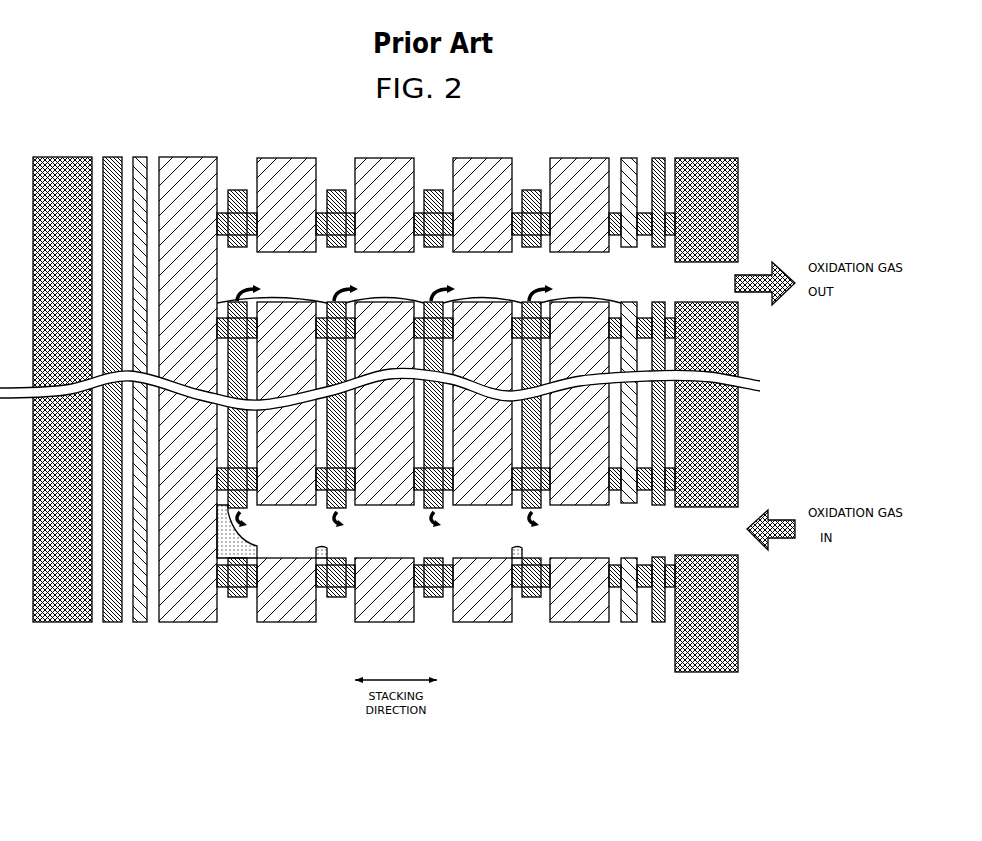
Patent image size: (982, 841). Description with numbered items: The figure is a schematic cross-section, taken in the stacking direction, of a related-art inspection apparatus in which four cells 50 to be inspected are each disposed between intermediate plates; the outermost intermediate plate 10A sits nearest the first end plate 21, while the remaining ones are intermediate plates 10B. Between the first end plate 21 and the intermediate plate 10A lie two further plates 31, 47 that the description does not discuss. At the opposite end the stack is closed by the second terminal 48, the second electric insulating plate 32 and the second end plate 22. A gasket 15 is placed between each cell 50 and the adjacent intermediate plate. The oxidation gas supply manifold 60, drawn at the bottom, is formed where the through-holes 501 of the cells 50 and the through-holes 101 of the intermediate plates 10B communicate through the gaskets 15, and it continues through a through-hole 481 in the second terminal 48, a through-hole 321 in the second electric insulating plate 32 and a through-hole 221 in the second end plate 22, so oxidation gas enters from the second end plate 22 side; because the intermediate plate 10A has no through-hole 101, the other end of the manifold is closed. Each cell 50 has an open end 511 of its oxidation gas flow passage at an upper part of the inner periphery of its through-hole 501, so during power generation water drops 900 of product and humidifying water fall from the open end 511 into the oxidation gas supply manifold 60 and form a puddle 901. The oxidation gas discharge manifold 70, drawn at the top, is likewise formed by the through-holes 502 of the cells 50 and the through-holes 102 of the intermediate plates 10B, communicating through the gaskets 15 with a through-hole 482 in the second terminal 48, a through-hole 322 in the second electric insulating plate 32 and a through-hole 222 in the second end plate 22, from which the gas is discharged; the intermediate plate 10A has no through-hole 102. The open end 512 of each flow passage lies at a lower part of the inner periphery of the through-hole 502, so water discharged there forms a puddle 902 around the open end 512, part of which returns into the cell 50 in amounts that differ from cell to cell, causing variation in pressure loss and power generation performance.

The first end plate 21 is at (76, 157).
The insulating plate 31 is at (119, 157).
The current collector plate 47 is at (139, 157).
The gasket 15 is at (222, 598).
The through-hole 502 is at (549, 190).
The through-hole 102 is at (615, 213).
The second terminal 48 is at (628, 158).
The through-hole 482 is at (644, 213).
The second electric insulating plate 32 is at (659, 158).
The through-hole 322 is at (670, 213).
The second end plate 22 is at (705, 158).
The through-hole 222 is at (765, 267).
The oxidation gas discharge manifold 70 is at (691, 287).
The open end 512 is at (528, 290).
The puddle 902 is at (573, 299).
The open end 511 is at (544, 519).
The puddle 901 is at (245, 536).
The water drops 900 is at (546, 530).
The oxidation gas supply manifold 60 is at (688, 539).
The through-hole 221 is at (758, 550).
The intermediate plate 10A is at (180, 622).
The intermediate plate 10B is at (419, 581).
The cell 50 is at (532, 597).
The through-hole 501 is at (556, 622).
The through-hole 101 is at (614, 587).
The through-hole 481 is at (644, 587).
The through-hole 321 is at (670, 587).